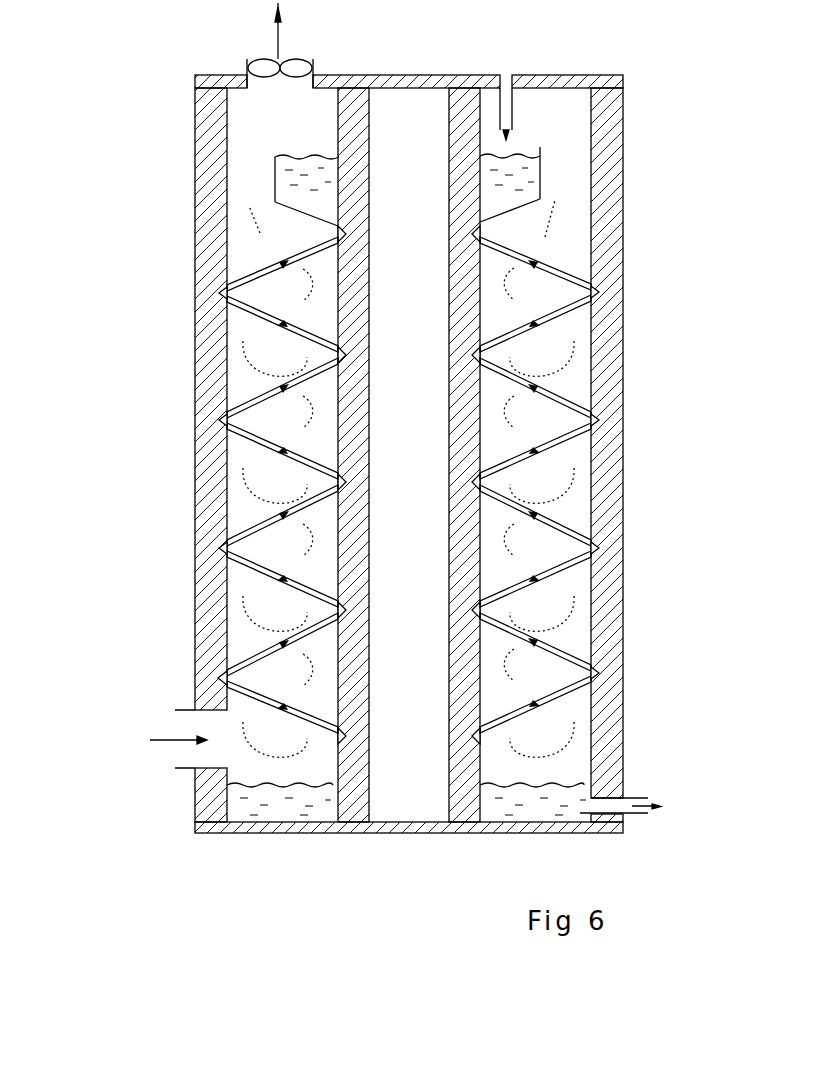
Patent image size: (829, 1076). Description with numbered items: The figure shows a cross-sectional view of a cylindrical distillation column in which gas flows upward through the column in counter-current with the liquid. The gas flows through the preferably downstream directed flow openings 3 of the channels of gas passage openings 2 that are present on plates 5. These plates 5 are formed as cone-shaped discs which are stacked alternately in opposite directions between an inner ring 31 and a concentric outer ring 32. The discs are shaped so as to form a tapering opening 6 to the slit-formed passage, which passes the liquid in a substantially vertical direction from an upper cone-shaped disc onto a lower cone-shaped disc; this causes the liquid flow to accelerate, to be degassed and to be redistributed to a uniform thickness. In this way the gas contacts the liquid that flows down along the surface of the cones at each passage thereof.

The gas passage openings 2 is at (486, 244).
The flow openings 3 is at (195, 390).
The plates 5 is at (540, 656).
The tapering opening 6 is at (225, 555).
The inner ring 31 is at (352, 105).
The outer ring 32 is at (205, 115).